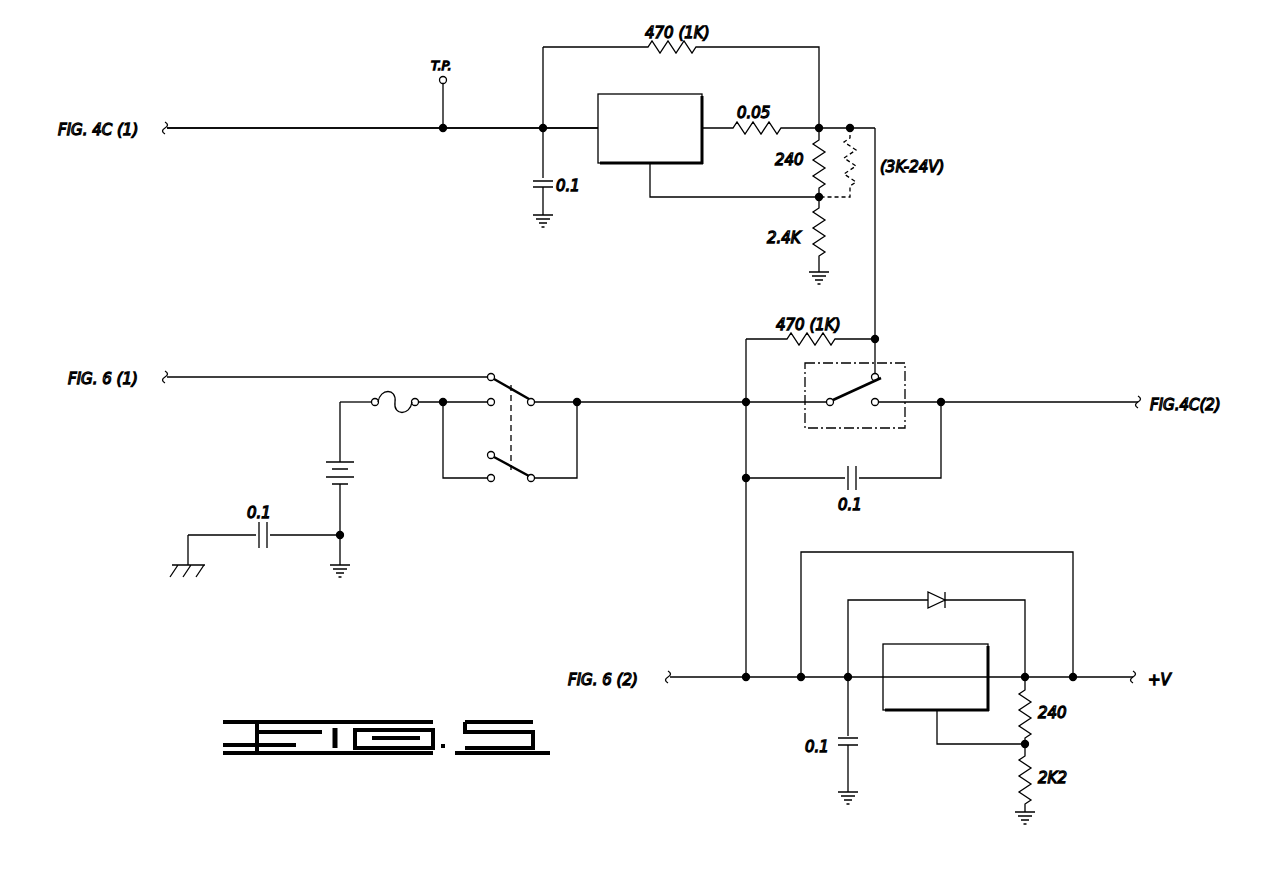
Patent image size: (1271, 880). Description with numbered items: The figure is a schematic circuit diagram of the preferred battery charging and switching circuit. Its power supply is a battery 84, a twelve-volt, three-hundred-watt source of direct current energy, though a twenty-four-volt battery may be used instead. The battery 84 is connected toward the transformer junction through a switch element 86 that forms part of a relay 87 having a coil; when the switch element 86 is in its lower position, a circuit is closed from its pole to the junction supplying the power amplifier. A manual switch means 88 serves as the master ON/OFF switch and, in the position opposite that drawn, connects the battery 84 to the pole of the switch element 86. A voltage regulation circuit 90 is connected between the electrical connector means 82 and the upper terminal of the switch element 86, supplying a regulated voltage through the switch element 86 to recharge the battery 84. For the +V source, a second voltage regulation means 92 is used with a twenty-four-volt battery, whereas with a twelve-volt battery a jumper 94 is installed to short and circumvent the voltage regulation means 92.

The electrical connector means 82 is at (304, 131).
The battery 84 is at (340, 458).
The switch element 86 is at (855, 395).
The relay 87 is at (900, 364).
The manual switch means 88 is at (511, 482).
The voltage regulation circuit 90 is at (650, 206).
The voltage regulation means 92 is at (925, 756).
The jumper 94 is at (972, 556).